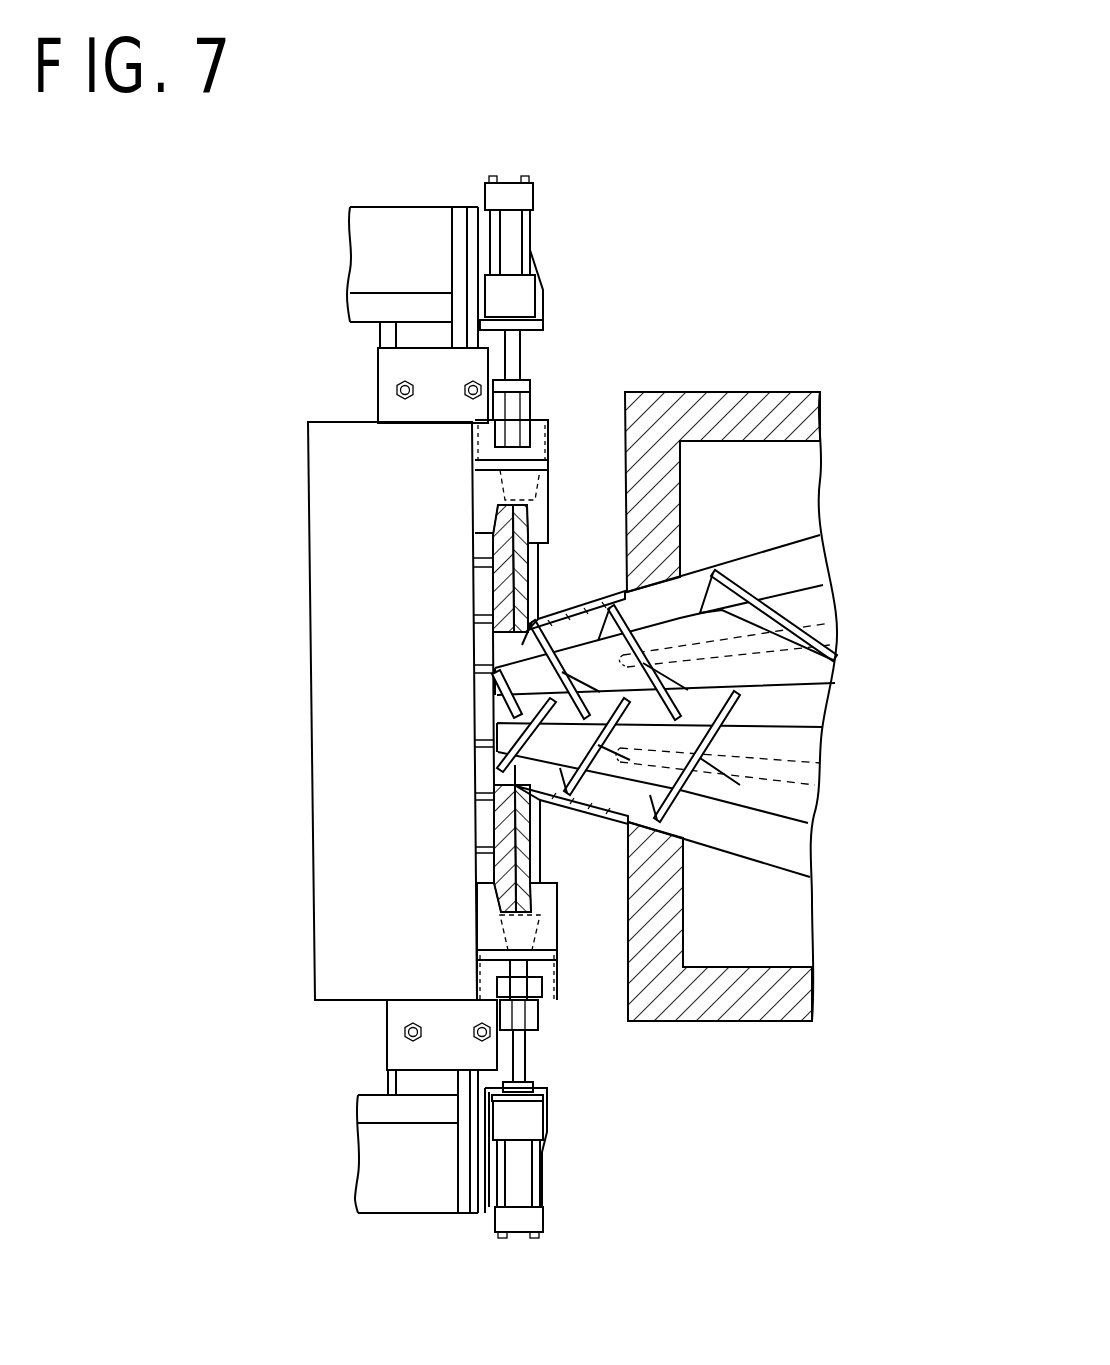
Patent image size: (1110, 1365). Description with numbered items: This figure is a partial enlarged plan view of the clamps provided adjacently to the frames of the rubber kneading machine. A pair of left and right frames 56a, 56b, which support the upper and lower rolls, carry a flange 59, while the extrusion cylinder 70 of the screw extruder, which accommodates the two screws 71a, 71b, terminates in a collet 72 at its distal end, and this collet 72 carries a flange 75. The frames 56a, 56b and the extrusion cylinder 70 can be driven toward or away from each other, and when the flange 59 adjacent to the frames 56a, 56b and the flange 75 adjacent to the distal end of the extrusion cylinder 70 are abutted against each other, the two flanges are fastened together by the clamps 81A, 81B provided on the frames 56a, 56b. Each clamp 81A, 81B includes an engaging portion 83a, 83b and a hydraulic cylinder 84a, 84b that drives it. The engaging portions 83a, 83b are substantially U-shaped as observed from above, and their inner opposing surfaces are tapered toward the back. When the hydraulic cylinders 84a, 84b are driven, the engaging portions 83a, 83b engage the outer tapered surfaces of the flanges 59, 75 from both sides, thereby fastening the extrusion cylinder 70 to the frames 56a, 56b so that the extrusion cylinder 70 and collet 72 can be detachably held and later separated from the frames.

The frame 56a is at (402, 1208).
The frame 56b is at (412, 207).
The flange 59 is at (503, 582).
The extrusion cylinder 70 is at (737, 1010).
The screw 71a is at (805, 797).
The screw 71b is at (812, 600).
The collet 72 is at (588, 818).
The flange 75 is at (533, 561).
The clamp 81A is at (539, 1152).
The clamp 81B is at (547, 288).
The engaging portion 83a is at (478, 970).
The engaging portion 83b is at (485, 520).
The hydraulic cylinder 84a is at (520, 1222).
The hydraulic cylinder 84b is at (528, 195).